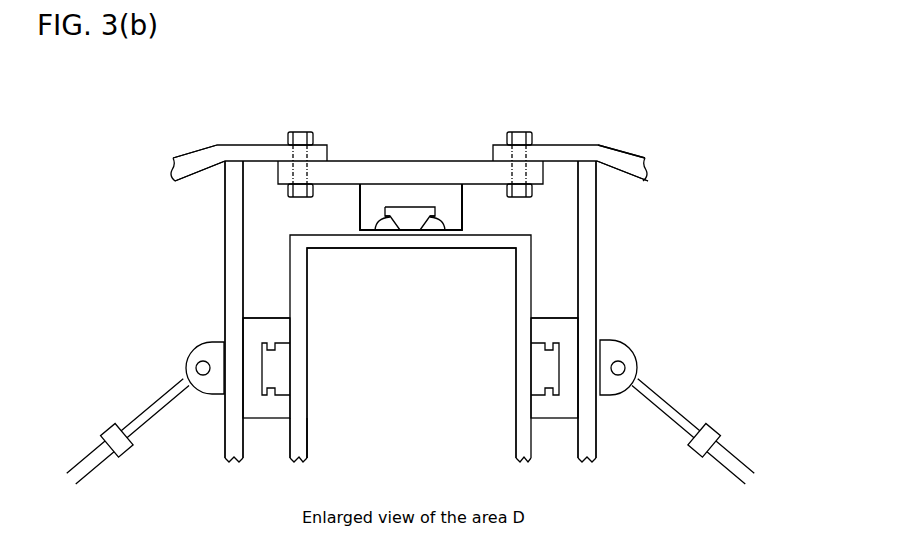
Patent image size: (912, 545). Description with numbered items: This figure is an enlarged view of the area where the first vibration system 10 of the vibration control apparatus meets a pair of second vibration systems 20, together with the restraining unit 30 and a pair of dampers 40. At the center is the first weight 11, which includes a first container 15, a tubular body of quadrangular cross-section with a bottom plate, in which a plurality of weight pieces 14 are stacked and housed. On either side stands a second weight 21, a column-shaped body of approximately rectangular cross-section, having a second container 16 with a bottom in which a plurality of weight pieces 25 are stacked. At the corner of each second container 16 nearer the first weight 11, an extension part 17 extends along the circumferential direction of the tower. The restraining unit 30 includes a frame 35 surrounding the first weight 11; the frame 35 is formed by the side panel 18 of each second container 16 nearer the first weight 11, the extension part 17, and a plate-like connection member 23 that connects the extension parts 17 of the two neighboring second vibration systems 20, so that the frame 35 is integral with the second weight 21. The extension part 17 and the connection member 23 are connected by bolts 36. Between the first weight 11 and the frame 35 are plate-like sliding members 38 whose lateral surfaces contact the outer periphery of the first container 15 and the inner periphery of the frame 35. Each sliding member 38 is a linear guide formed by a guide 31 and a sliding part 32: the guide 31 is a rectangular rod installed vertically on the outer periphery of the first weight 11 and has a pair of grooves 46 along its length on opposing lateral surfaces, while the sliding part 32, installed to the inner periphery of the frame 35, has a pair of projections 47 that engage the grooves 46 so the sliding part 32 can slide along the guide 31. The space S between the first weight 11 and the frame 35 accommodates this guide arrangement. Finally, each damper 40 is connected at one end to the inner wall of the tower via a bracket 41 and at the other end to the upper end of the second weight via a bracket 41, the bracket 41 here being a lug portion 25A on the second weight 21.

The first vibration system 10 is at (414, 92).
The first weight 11 is at (322, 437).
The weight pieces 14 is at (402, 346).
The first container 15 is at (534, 239).
The second container 16 is at (167, 140).
The extension part 17 is at (260, 148).
The side panel 18 is at (238, 270).
The second vibration system 20 is at (206, 109).
The second weight 21 is at (127, 97).
The connection member 23 is at (440, 174).
The weight pieces 25 is at (205, 177).
The pivot lug 25A is at (143, 344).
The restraining unit 30 is at (392, 97).
The guide 31 is at (410, 232).
The sliding part 32 is at (407, 190).
The frame 35 is at (378, 139).
The bolts 36 is at (302, 131).
The sliding member 38 is at (350, 190).
The damper 40 is at (97, 460).
The bracket 41 is at (183, 365).
The grooves 46 is at (397, 238).
The projections 47 is at (383, 220).
The space S is at (331, 224).